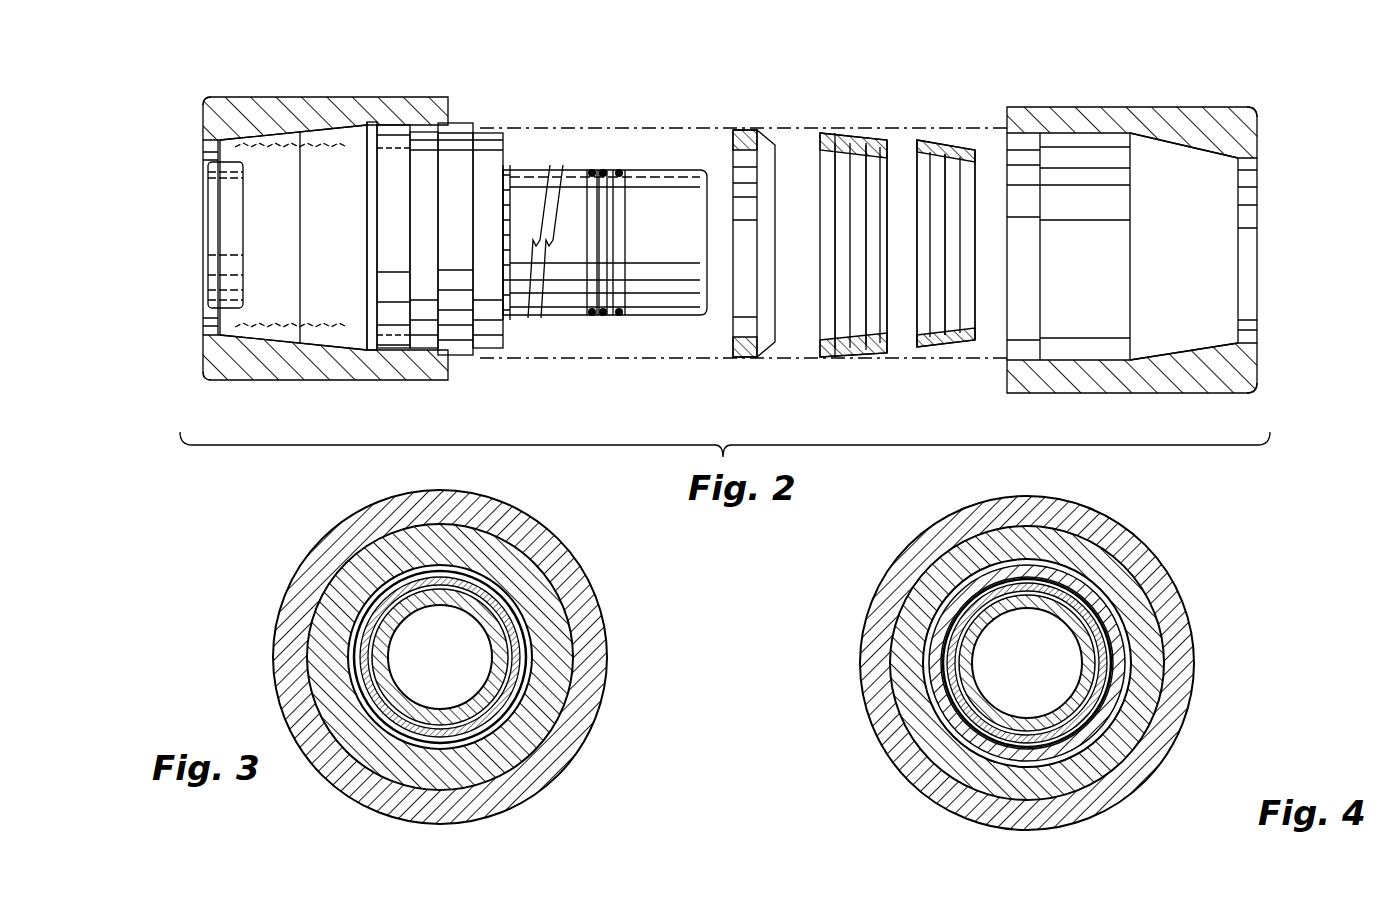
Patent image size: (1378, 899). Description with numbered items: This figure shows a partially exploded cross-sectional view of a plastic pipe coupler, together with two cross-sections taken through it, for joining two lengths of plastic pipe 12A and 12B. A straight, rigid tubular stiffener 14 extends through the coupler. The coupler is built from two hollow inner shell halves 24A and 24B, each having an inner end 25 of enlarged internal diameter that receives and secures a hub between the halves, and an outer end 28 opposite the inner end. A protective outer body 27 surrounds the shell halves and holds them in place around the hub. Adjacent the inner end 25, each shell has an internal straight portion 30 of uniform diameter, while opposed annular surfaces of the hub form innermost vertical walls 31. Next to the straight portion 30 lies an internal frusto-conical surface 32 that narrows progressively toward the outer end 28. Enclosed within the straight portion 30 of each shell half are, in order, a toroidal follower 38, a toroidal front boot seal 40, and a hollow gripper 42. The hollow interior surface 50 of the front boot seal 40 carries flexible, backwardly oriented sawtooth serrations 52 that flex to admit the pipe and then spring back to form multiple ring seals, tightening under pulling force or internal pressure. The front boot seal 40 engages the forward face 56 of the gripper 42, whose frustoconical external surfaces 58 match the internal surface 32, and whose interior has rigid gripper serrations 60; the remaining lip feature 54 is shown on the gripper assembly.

In FIG. 3, the plastic pipe 12A is at (520, 678).
In FIG. 4, the plastic pipe 12B is at (1113, 690).
In FIG. 3, the tubular stiffener 14 is at (487, 700).
In FIG. 4, the tubular stiffener 14 is at (1062, 718).
In FIG. 2, the inner shell half 24A is at (322, 108).
In FIG. 2, the inner shell half 24B is at (1177, 110).
In FIG. 4, the inner shell half 24B is at (1137, 592).
In FIG. 2, the inner end 25 is at (437, 102).
In FIG. 3, the inner end 25 is at (555, 558).
In FIG. 3, the protective outer body 27 is at (530, 540).
In FIG. 4, the protective outer body 27 is at (1125, 565).
In FIG. 2, the outer end 28 is at (204, 100).
In FIG. 2, the internal straight portion 30 is at (393, 140).
In FIG. 2, the innermost vertical wall 31 is at (405, 325).
In FIG. 2, the internal frusto-conical surface 32 is at (261, 332).
In FIG. 2, the toroidal follower 38 is at (406, 138).
In FIG. 4, the toroidal follower 38 is at (1128, 645).
In FIG. 2, the front boot seal 40 is at (350, 313).
In FIG. 2, the gripper 42 is at (280, 150).
In FIG. 3, the gripper 42 is at (533, 635).
In FIG. 2, the hollow interior surface 50 is at (822, 332).
In FIG. 2, the serrations 52 is at (862, 330).
In FIG. 2, the second lip 54 is at (893, 350).
In FIG. 2, the forward face 56 is at (917, 340).
In FIG. 2, the external surface 58 is at (943, 345).
In FIG. 2, the gripper serrations 60 is at (965, 340).